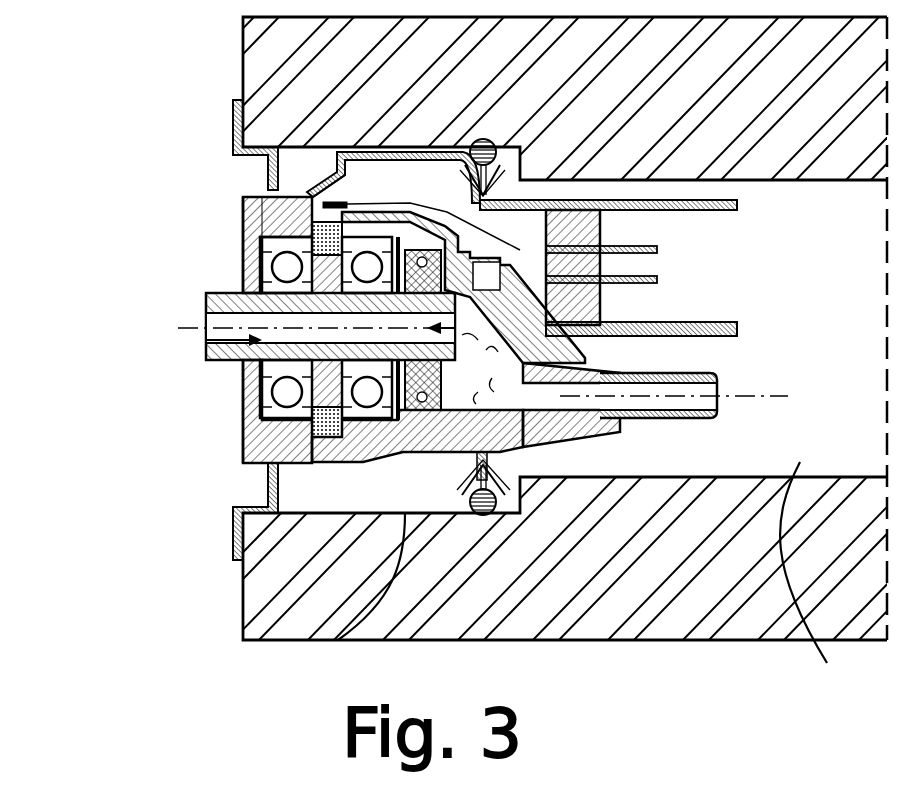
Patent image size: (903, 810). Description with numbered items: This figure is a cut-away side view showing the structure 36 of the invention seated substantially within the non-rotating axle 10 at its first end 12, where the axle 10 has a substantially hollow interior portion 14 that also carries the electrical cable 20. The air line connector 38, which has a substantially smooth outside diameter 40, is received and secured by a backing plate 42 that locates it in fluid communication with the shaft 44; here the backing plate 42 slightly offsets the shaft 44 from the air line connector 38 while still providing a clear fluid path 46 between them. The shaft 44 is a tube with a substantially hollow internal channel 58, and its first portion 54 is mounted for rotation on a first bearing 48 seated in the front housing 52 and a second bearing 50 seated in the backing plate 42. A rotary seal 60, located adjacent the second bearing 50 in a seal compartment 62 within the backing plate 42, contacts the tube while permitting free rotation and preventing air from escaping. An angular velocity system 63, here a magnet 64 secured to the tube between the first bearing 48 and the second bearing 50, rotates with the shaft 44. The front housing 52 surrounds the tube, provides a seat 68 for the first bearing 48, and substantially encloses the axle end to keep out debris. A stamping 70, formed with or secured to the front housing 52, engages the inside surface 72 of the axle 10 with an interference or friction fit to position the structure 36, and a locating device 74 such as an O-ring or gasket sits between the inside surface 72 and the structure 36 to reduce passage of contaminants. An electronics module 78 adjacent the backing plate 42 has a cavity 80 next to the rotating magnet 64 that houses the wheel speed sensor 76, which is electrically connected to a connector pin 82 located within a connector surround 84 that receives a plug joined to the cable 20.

The axle 10 is at (700, 640).
The first end 12 is at (600, 668).
The interior portion 14 is at (813, 577).
The electrical cable 20 is at (540, 252).
The structure 36 is at (138, 94).
The air line connector 38 is at (748, 385).
The outside diameter 40 is at (688, 420).
The backing plate 42 is at (580, 443).
The shaft 44 is at (218, 293).
The fluid path 46 is at (541, 368).
The first bearing 48 is at (262, 392).
The second bearing 50 is at (305, 413).
The front housing 52 is at (248, 198).
The first portion 54 is at (198, 320).
The internal channel 58 is at (205, 337).
The seal 60 is at (428, 385).
The seal compartment 62 is at (425, 400).
The angular velocity system 63 is at (243, 213).
The magnet 64 is at (243, 440).
The seat 68 is at (282, 227).
The stamping 70 is at (236, 100).
The inside surface 72 is at (338, 640).
The locating device 74 is at (468, 505).
The sensor 76 is at (305, 195).
The electronics module 78 is at (440, 146).
The cavity 80 is at (443, 173).
The connector pin 82 is at (690, 265).
The connector surround 84 is at (737, 200).